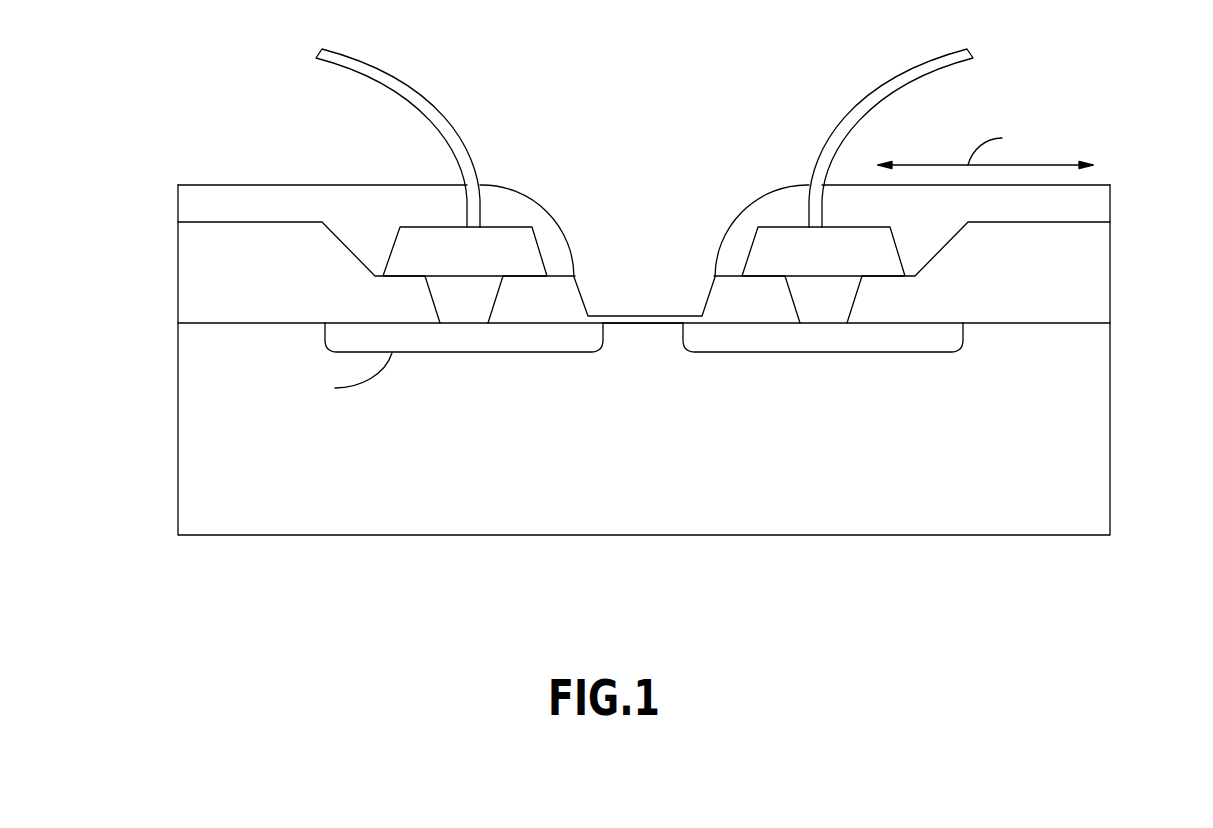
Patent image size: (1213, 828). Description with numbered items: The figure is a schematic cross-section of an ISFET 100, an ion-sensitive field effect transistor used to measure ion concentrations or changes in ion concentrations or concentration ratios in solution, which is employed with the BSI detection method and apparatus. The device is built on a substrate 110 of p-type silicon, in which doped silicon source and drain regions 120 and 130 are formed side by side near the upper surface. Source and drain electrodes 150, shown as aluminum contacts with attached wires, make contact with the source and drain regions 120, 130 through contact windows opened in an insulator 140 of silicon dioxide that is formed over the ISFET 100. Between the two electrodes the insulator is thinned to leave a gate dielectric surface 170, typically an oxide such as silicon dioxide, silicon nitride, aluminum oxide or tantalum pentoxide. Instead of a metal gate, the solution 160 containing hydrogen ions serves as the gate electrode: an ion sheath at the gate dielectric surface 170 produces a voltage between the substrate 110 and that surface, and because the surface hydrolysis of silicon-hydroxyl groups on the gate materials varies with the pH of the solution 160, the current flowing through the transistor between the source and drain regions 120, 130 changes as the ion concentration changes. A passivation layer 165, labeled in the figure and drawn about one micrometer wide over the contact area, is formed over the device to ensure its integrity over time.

The ISFET 100 is at (322, 129).
The substrate 110 is at (270, 505).
The source region 120 is at (458, 340).
The drain region 130 is at (868, 342).
The insulator 140 is at (1065, 280).
The source and drain electrodes 150 is at (415, 240).
The solution 160 is at (646, 205).
The passivation layer 165 is at (1093, 200).
The gate dielectric surface 170 is at (637, 317).